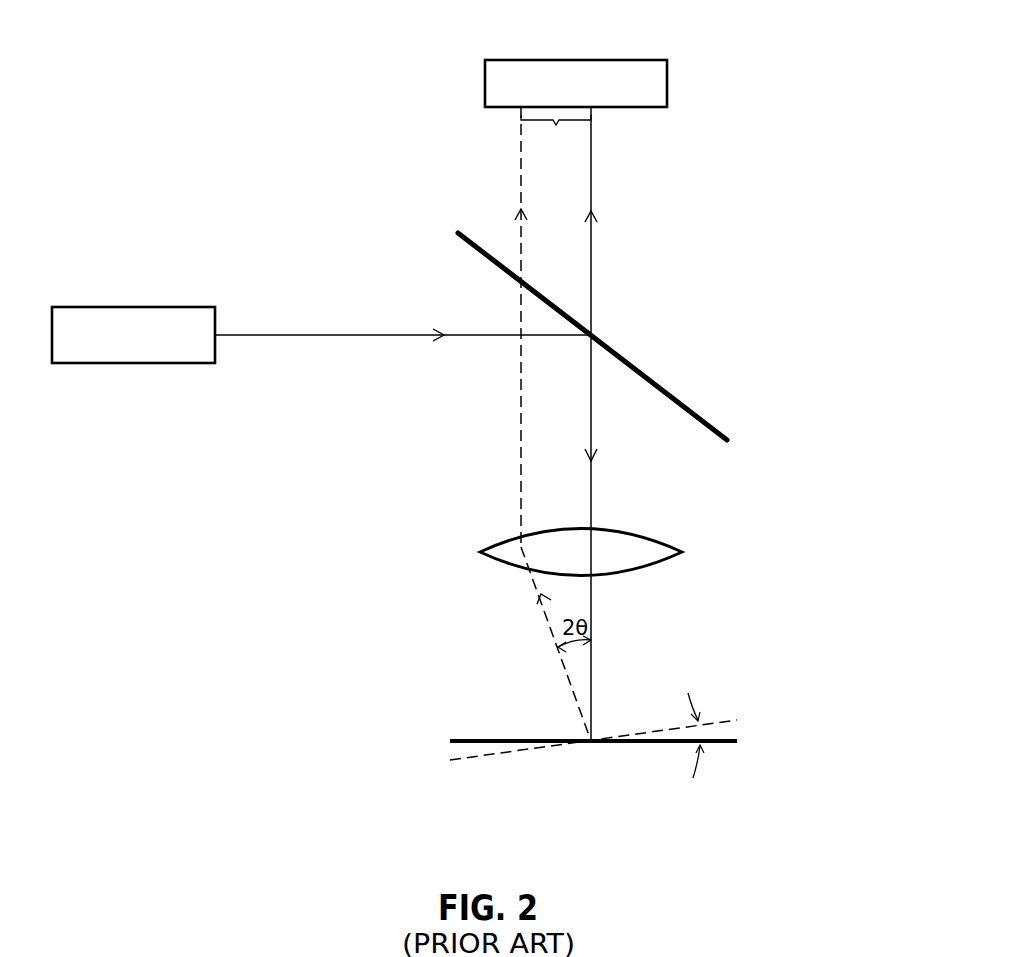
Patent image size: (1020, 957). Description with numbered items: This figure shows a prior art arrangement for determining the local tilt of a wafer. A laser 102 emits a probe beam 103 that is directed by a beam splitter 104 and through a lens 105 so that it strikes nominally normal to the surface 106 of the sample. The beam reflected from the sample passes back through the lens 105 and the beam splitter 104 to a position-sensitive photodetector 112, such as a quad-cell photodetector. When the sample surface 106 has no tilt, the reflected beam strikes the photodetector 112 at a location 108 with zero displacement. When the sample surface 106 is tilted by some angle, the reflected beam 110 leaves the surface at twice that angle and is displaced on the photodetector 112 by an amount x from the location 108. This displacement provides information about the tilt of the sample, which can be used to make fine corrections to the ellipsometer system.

The position-sensitive photodetector 112 is at (549, 58).
The location at which the reflected beam would hit the photodetector in the absence 108 is at (592, 108).
The reflected beam 110 is at (519, 393).
The laser 102 is at (131, 363).
The probe beam 103 is at (300, 336).
The beam splitter 104 is at (655, 383).
The lens 105 is at (615, 540).
The surface of the sample 106 is at (720, 725).